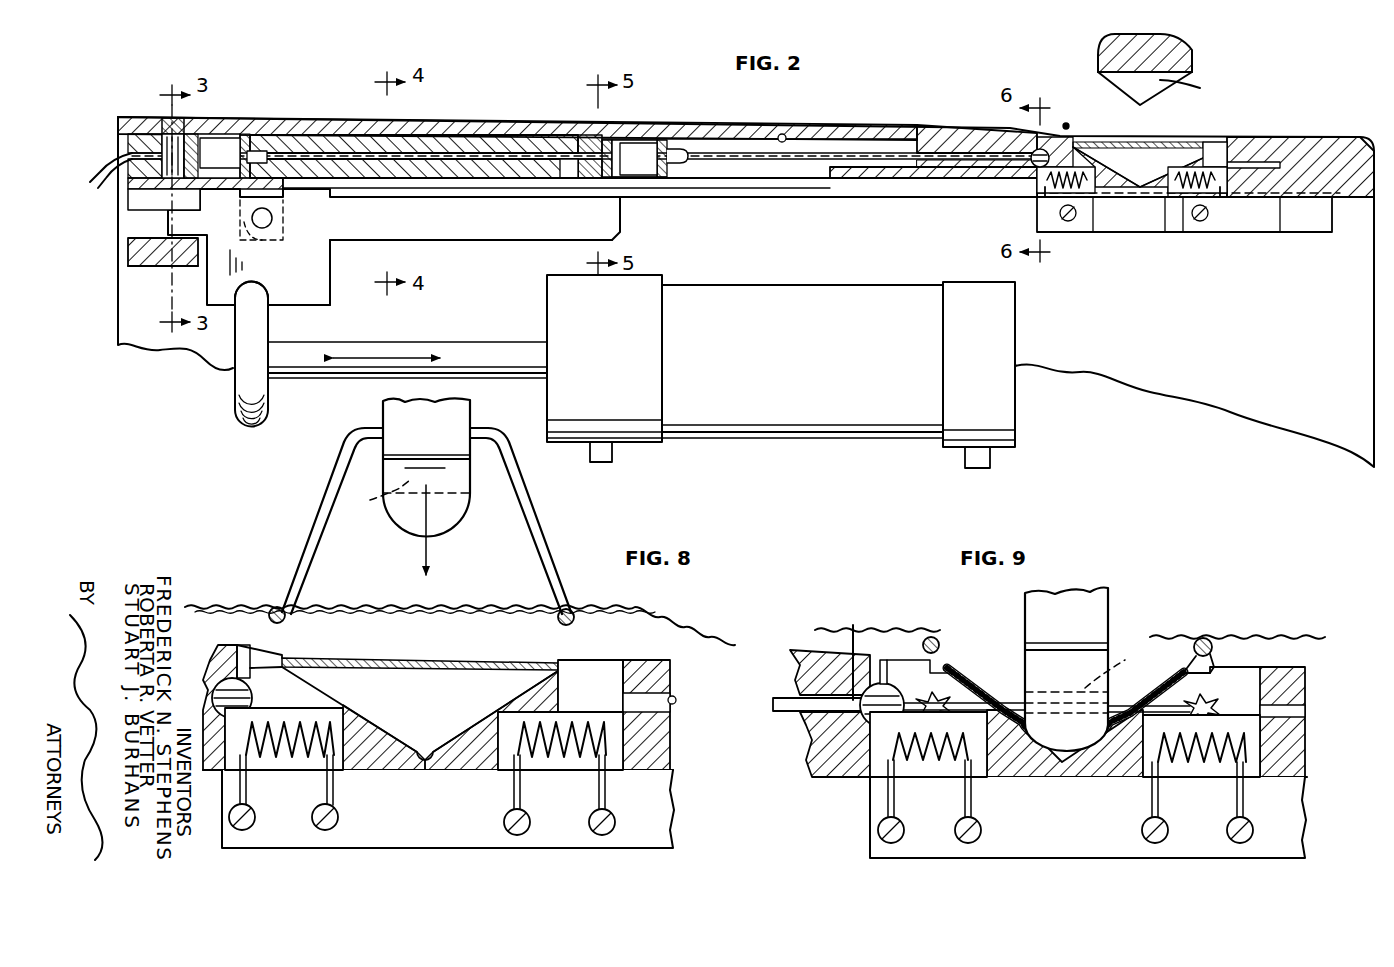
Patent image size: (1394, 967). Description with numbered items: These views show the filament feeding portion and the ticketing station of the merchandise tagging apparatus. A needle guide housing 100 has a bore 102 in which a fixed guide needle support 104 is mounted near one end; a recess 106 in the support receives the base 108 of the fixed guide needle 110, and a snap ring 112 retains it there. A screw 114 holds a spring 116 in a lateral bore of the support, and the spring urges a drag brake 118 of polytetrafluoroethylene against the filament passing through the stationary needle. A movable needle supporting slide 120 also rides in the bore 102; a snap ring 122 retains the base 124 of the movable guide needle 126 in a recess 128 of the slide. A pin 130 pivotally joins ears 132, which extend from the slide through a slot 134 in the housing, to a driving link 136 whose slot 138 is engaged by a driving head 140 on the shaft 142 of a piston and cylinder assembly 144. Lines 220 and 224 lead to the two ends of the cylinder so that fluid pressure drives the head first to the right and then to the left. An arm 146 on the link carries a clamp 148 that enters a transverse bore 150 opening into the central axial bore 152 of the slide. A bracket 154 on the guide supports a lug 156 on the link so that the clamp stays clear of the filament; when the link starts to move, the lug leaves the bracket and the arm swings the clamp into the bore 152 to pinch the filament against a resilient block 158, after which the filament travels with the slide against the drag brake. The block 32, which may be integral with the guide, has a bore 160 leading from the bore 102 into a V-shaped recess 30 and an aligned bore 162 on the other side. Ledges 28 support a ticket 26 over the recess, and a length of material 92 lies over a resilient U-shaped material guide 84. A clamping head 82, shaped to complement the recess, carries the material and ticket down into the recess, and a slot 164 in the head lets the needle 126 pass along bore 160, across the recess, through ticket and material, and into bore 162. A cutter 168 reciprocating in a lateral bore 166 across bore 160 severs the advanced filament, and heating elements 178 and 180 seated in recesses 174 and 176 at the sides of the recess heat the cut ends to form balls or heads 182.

In FIG. 2, the ticket 26 is at (1148, 142).
In FIG. 8, the ticket 26 is at (480, 658).
In FIG. 9, the ticket 26 is at (1005, 690).
In FIG. 2, the ledges 28 is at (1222, 142).
In FIG. 8, the ledges 28 is at (565, 660).
In FIG. 9, the ledges 28 is at (1195, 645).
In FIG. 2, the V-shaped recess 30 is at (1145, 195).
In FIG. 8, the V-shaped recess 30 is at (428, 760).
In FIG. 9, the V-shaped recess 30 is at (1070, 777).
In FIG. 2, the block 32 is at (1368, 200).
In FIG. 2, the clamping head 82 is at (1192, 48).
In FIG. 8, the clamping head 82 is at (468, 522).
In FIG. 9, the clamping head 82 is at (1110, 618).
In FIG. 2, the material guide 84 is at (1068, 122).
In FIG. 8, the material guide 84 is at (580, 610).
In FIG. 9, the material guide 84 is at (933, 637).
In FIG. 8, the material 92 is at (705, 625).
In FIG. 9, the material 92 is at (1320, 635).
In FIG. 2, the needle guide housing 100 is at (512, 120).
In FIG. 9, the needle guide housing 100 is at (808, 775).
In FIG. 2, the bore 102 is at (782, 134).
In FIG. 2, the fixed guide needle support 104 is at (118, 147).
In FIG. 2, the recess 106 is at (222, 134).
In FIG. 2, the base 108 is at (270, 135).
In FIG. 2, the fixed guide needle 110 is at (332, 135).
In FIG. 2, the snap ring 112 is at (232, 138).
In FIG. 2, the screw 114 is at (170, 118).
In FIG. 2, the spring 116 is at (180, 140).
In FIG. 2, the drag brake 118 is at (164, 199).
In FIG. 2, the movable needle supporting slide 120 is at (460, 118).
In FIG. 2, the snap ring 122 is at (680, 140).
In FIG. 2, the base 124 is at (652, 183).
In FIG. 2, the movable guide needle 126 is at (870, 152).
In FIG. 9, the movable guide needle 126 is at (780, 700).
In FIG. 2, the recess 128 is at (664, 140).
In FIG. 2, the pin 130 is at (265, 235).
In FIG. 2, the ears 132 is at (278, 197).
In FIG. 2, the slot 134 is at (760, 197).
In FIG. 2, the driving link 136 is at (332, 300).
In FIG. 2, the slot 138 is at (262, 300).
In FIG. 2, the driving head 140 is at (240, 427).
In FIG. 2, the shaft 142 is at (488, 345).
In FIG. 2, the piston and cylinder assembly 144 is at (805, 272).
In FIG. 2, the arm 146 is at (620, 236).
In FIG. 2, the clamp 148 is at (590, 203).
In FIG. 2, the transverse bore 150 is at (560, 178).
In FIG. 2, the central axially-extending bore 152 is at (412, 135).
In FIG. 2, the bracket 154 is at (145, 268).
In FIG. 2, the lug 156 is at (128, 246).
In FIG. 2, the block 158 is at (590, 135).
In FIG. 2, the bore 160 is at (958, 135).
In FIG. 8, the bore 160 is at (202, 690).
In FIG. 9, the bore 160 is at (853, 625).
In FIG. 2, the bore 162 is at (1255, 148).
In FIG. 8, the bore 162 is at (676, 700).
In FIG. 9, the bore 162 is at (1308, 712).
In FIG. 2, the slot 164 is at (1201, 92).
In FIG. 8, the slot 164 is at (372, 508).
In FIG. 9, the slot 164 is at (1121, 657).
In FIG. 2, the bore 166 is at (1040, 149).
In FIG. 8, the bore 166 is at (272, 620).
In FIG. 9, the bore 166 is at (915, 672).
In FIG. 8, the cutter 168 is at (250, 698).
In FIG. 9, the cutter 168 is at (887, 683).
In FIG. 2, the recess 174 is at (1042, 200).
In FIG. 8, the recess 174 is at (335, 762).
In FIG. 9, the recess 174 is at (880, 785).
In FIG. 2, the recess 176 is at (1222, 197).
In FIG. 8, the recess 176 is at (612, 770).
In FIG. 9, the recess 176 is at (1252, 777).
In FIG. 2, the heating element 178 is at (1082, 197).
In FIG. 8, the heating element 178 is at (295, 770).
In FIG. 9, the heating element 178 is at (935, 775).
In FIG. 2, the heating element 180 is at (1210, 197).
In FIG. 8, the heating element 180 is at (570, 765).
In FIG. 9, the heating element 180 is at (1210, 775).
In FIG. 9, the balls or heads 182 is at (940, 690).
In FIG. 2, the line 220 is at (965, 466).
In FIG. 2, the line 224 is at (612, 462).